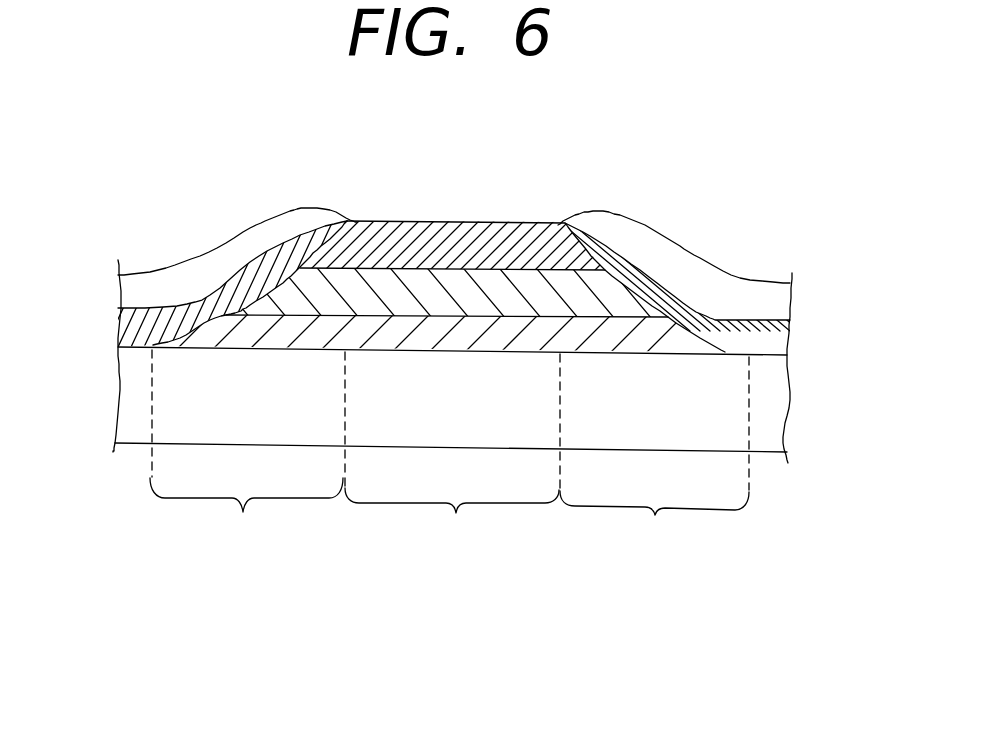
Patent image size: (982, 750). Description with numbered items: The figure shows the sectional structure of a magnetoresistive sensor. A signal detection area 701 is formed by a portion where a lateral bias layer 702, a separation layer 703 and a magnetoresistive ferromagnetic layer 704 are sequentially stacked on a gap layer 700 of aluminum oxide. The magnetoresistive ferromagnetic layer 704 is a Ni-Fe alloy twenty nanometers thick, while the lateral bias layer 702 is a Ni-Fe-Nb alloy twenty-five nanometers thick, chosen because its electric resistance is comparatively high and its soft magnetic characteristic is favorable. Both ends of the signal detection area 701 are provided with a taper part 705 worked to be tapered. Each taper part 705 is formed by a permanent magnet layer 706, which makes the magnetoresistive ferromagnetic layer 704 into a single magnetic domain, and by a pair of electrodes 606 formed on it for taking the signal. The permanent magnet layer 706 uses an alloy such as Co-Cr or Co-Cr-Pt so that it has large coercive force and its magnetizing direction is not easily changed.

The gap layer 700 is at (770, 392).
The signal detection area 701 is at (452, 451).
The lateral bias layer 702 is at (508, 335).
The separation layer 703 is at (452, 287).
The magnetoresistive ferromagnetic layer 704 is at (387, 235).
The taper part 705 is at (449, 451).
The permanent magnet layer 706 is at (210, 297).
The electrodes 606 is at (233, 243).